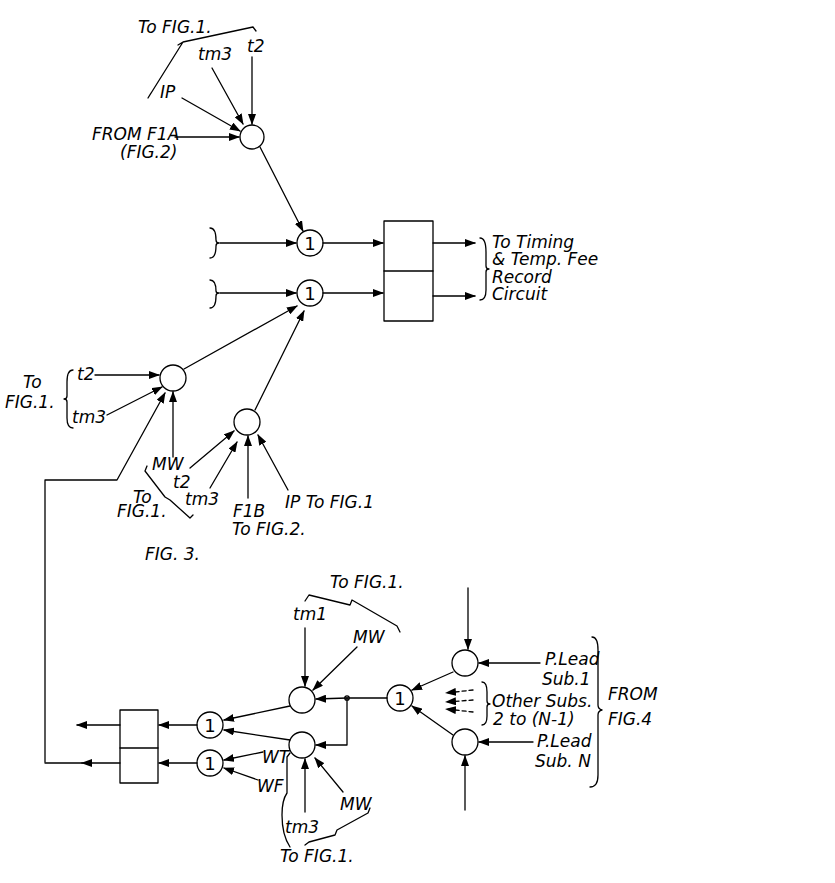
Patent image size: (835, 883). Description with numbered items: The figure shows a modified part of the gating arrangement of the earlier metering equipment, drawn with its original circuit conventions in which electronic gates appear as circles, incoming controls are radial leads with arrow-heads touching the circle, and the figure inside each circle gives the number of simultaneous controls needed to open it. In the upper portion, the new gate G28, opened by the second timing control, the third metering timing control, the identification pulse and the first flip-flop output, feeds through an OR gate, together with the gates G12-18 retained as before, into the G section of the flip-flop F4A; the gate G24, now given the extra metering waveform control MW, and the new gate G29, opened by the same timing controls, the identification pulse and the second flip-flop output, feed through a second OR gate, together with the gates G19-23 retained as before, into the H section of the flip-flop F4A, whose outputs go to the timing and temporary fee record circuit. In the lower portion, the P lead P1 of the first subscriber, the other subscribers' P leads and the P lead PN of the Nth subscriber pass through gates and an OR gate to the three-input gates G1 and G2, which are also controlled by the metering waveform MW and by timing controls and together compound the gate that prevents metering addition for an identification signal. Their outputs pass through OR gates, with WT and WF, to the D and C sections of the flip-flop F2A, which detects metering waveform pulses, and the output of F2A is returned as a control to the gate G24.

The gate G28 is at (241, 144).
The gates G12-18 is at (207, 237).
The gates G19-23 is at (205, 288).
The flip-flop F4A is at (408, 257).
The gate G24 is at (171, 534).
The gate G29 is at (247, 404).
The flip-flop F2A is at (140, 734).
The gate G1 is at (290, 674).
The gate G2 is at (283, 764).
The P lead of subscriber 1 P1 is at (476, 623).
The P lead of subscriber N PN is at (474, 773).